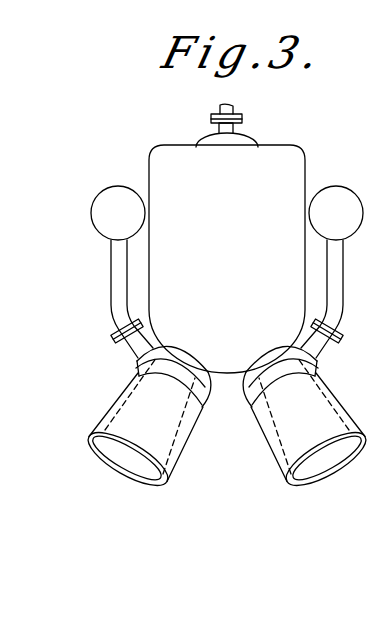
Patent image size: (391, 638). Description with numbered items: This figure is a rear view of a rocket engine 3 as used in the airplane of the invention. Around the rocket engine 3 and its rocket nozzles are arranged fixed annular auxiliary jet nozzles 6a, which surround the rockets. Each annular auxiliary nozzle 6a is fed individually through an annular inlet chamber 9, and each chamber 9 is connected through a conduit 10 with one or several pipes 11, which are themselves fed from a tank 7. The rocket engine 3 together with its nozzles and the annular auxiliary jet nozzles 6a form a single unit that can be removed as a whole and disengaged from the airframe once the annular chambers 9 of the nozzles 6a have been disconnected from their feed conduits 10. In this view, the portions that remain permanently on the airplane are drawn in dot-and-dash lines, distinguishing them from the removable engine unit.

The rocket engine 3 is at (227, 238).
The pipe 11 is at (128, 223).
The conduit 10 is at (115, 283).
The annular inlet chamber 9 is at (248, 393).
The tank 7 is at (135, 463).
The fixed annular auxiliary nozzle 6a is at (92, 441).